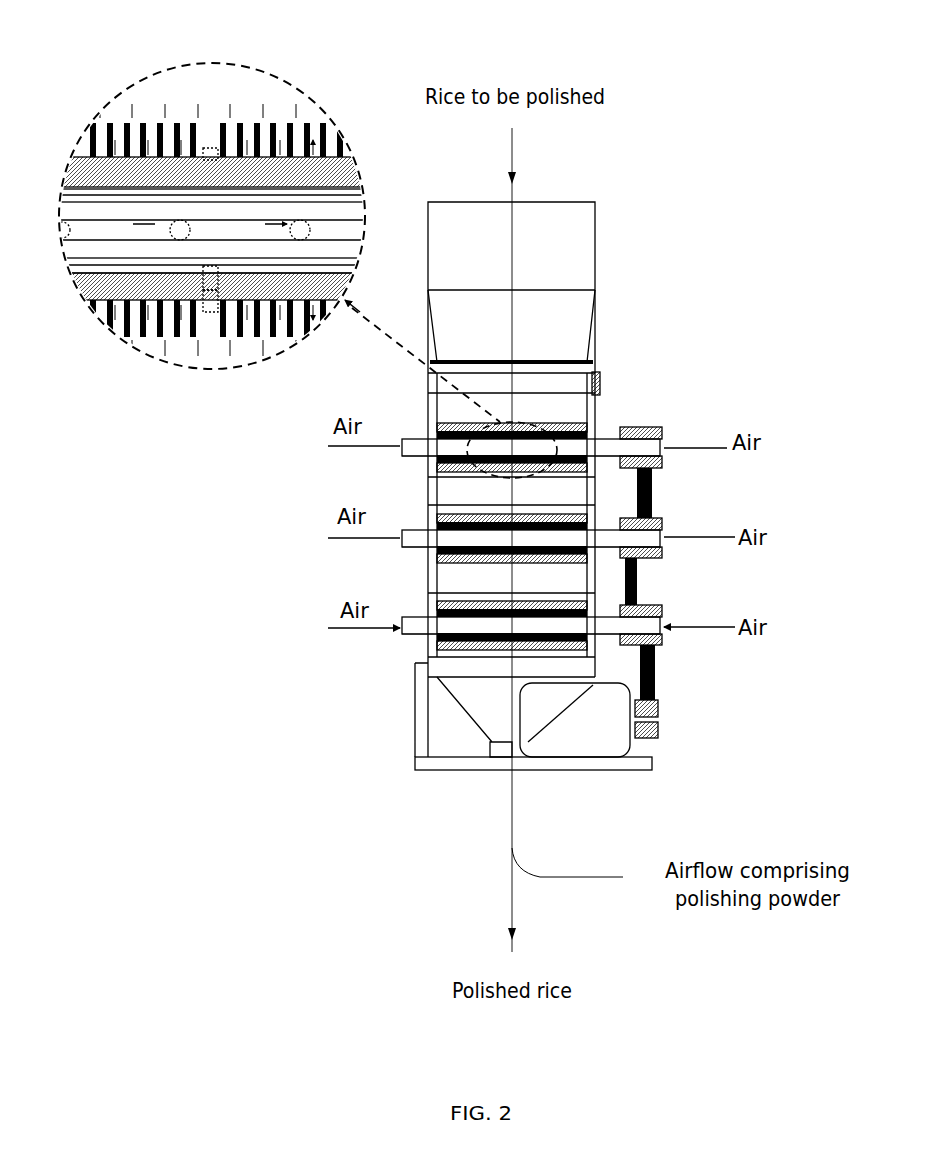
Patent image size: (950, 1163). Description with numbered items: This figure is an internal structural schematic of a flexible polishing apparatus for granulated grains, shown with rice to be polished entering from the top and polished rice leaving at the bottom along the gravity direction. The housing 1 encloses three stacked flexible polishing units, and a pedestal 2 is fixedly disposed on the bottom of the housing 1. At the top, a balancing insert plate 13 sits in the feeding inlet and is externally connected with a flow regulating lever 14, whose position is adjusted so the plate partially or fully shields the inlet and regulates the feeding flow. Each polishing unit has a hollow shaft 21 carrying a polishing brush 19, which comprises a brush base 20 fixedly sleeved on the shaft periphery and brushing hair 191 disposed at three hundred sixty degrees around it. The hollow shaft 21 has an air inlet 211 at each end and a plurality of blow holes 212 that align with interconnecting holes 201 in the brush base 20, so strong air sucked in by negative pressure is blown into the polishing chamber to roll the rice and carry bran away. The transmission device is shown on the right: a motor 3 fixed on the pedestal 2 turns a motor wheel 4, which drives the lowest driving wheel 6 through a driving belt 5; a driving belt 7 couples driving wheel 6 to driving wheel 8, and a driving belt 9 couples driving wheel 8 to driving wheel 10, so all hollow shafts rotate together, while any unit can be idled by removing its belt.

The housing 1 is at (428, 558).
The pedestal 2 is at (447, 757).
The motor 3 is at (607, 745).
The motor wheel 4 is at (658, 732).
The driving belt 5 is at (657, 688).
The driving wheel 6 is at (662, 610).
The driving belt 7 is at (637, 578).
The driving wheel 8 is at (660, 515).
The driving belt 9 is at (652, 500).
The driving wheel 10 is at (590, 417).
The balancing insert plate 13 is at (483, 360).
The flow regulating lever 14 is at (560, 360).
The polishing brush 19 is at (593, 382).
The brush base 20 is at (435, 418).
The hollow shaft 21 is at (660, 428).
The brushing hair 191 is at (440, 392).
The interconnecting hole 201 is at (212, 197).
The air inlet 211 is at (405, 457).
The blow hole 212 is at (212, 197).